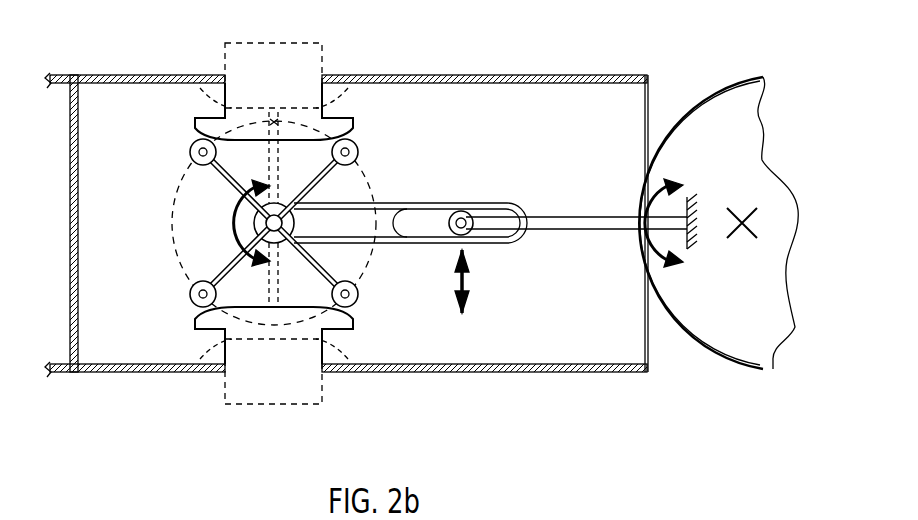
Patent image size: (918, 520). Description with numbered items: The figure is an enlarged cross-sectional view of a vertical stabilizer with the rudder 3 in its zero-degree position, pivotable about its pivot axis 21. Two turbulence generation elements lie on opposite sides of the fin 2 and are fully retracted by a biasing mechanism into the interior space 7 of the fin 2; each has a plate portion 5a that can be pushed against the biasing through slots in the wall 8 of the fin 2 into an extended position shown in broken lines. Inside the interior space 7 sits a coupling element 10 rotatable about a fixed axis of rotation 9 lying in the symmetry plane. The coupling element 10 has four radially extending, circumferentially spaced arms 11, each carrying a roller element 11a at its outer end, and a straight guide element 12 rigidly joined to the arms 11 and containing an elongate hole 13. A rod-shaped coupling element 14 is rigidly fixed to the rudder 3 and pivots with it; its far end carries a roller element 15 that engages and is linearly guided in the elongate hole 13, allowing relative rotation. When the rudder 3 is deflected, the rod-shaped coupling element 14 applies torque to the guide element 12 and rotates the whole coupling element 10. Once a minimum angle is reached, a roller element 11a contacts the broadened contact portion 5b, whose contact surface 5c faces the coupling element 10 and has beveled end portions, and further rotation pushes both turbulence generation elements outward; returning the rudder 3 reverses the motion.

The fin 2 is at (88, 74).
The rudder 3 is at (742, 86).
The plate portion 5a is at (362, 104).
The contact portion 5b is at (208, 117).
The contact surface 5c is at (253, 137).
The interior space 7 is at (584, 344).
The wall 8 is at (433, 74).
The axis of rotation 9 is at (248, 222).
The coupling element 10 is at (390, 190).
The arms 11 is at (213, 177).
The roller element 11a is at (191, 149).
The guide element 12 is at (392, 235).
The elongate hole 13 is at (430, 237).
The rod-shaped coupling element 14 is at (628, 217).
The roller element 15 is at (470, 205).
The pivot axis 21 is at (742, 215).